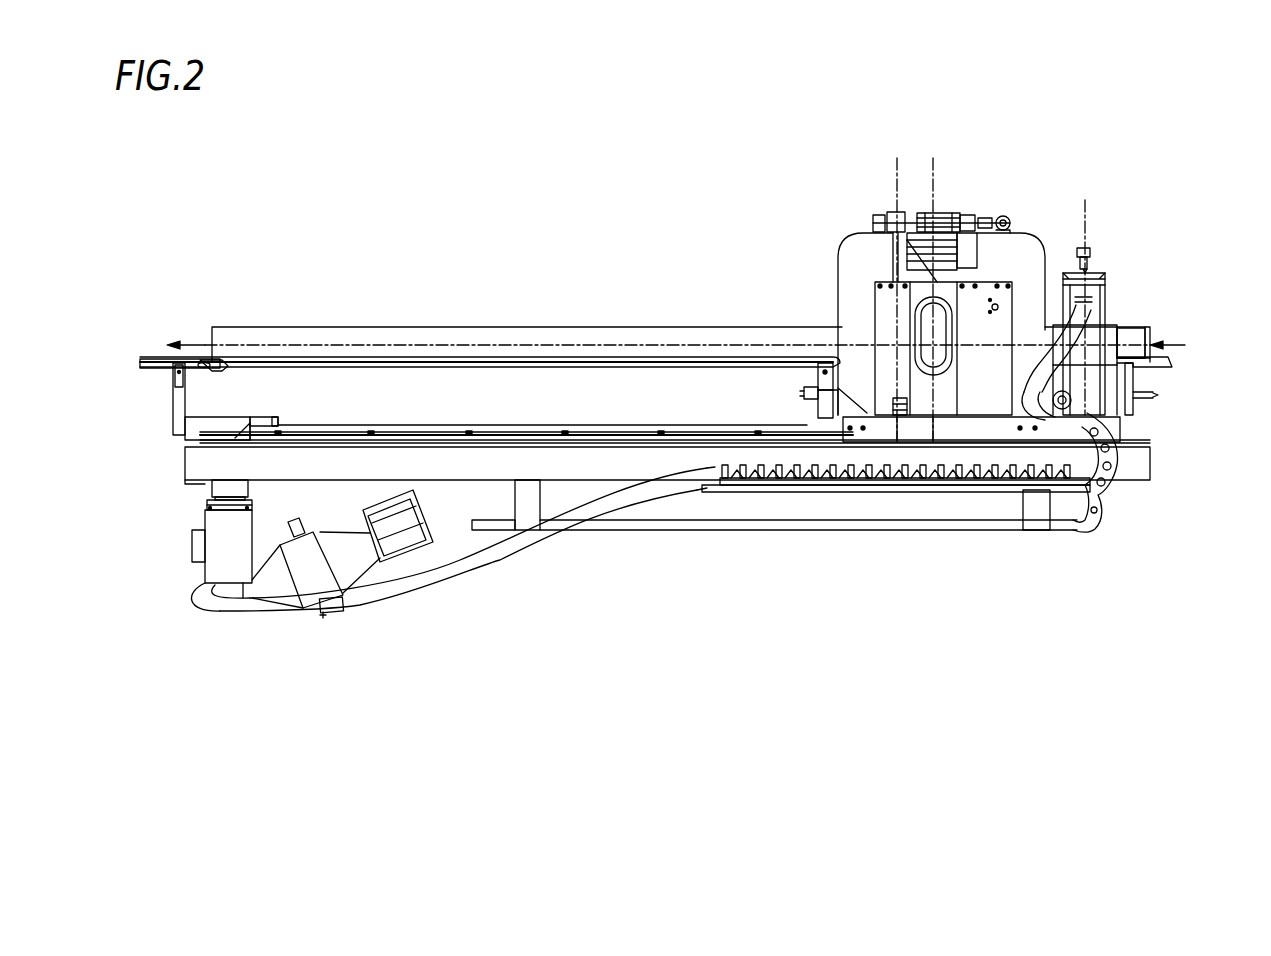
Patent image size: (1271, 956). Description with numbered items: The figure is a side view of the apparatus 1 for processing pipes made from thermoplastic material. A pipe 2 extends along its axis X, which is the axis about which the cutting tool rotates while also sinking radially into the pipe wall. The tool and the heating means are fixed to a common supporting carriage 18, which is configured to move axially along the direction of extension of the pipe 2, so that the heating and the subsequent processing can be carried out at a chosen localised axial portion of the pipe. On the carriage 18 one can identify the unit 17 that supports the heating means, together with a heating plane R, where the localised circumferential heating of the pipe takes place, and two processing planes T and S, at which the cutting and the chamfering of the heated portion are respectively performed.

The apparatus for processing pipes 1 is at (1035, 233).
The pipe 2 is at (400, 328).
The unit for supporting the heating means 17 is at (1110, 304).
The supporting carriage 18 is at (838, 432).
The processing plane S is at (897, 188).
The processing plane T is at (933, 188).
The axis of the pipe X is at (296, 345).
The heating plane R is at (1088, 235).